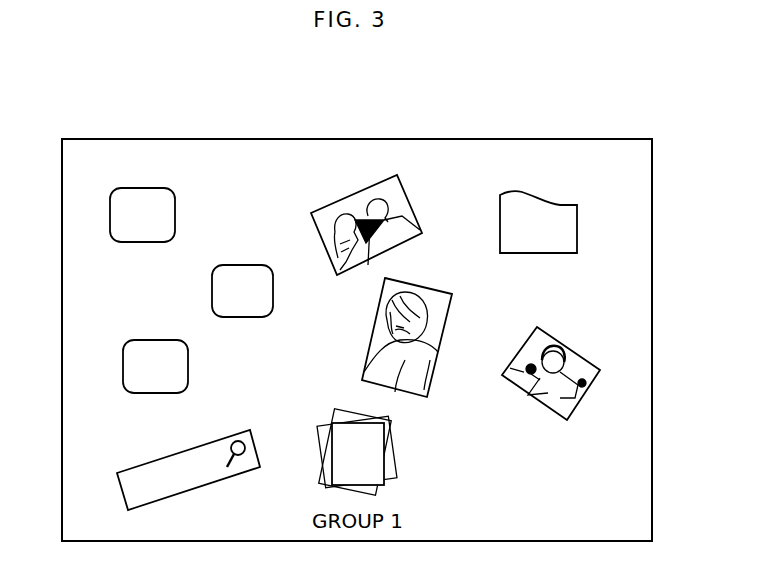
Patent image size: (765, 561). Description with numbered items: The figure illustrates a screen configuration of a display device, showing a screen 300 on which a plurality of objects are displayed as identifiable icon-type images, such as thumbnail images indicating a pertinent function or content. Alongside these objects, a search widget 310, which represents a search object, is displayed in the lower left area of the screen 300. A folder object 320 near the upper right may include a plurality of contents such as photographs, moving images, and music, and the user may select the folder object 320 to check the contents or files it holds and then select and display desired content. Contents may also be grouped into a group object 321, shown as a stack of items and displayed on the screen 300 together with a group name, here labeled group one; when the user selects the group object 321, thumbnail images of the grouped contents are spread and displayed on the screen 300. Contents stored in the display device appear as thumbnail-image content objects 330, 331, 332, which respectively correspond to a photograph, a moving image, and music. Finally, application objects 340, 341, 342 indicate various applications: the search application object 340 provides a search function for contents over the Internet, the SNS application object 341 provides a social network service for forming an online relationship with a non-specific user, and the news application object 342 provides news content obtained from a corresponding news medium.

The screen 300 is at (433, 139).
The search widget 310 is at (233, 478).
The folder object 320 is at (541, 192).
The group object 321 is at (393, 452).
The content object 330 is at (445, 323).
The content object 331 is at (352, 190).
The content object 332 is at (568, 348).
The search application object 340 is at (141, 188).
The SNS application object 341 is at (243, 265).
The news application object 342 is at (155, 340).